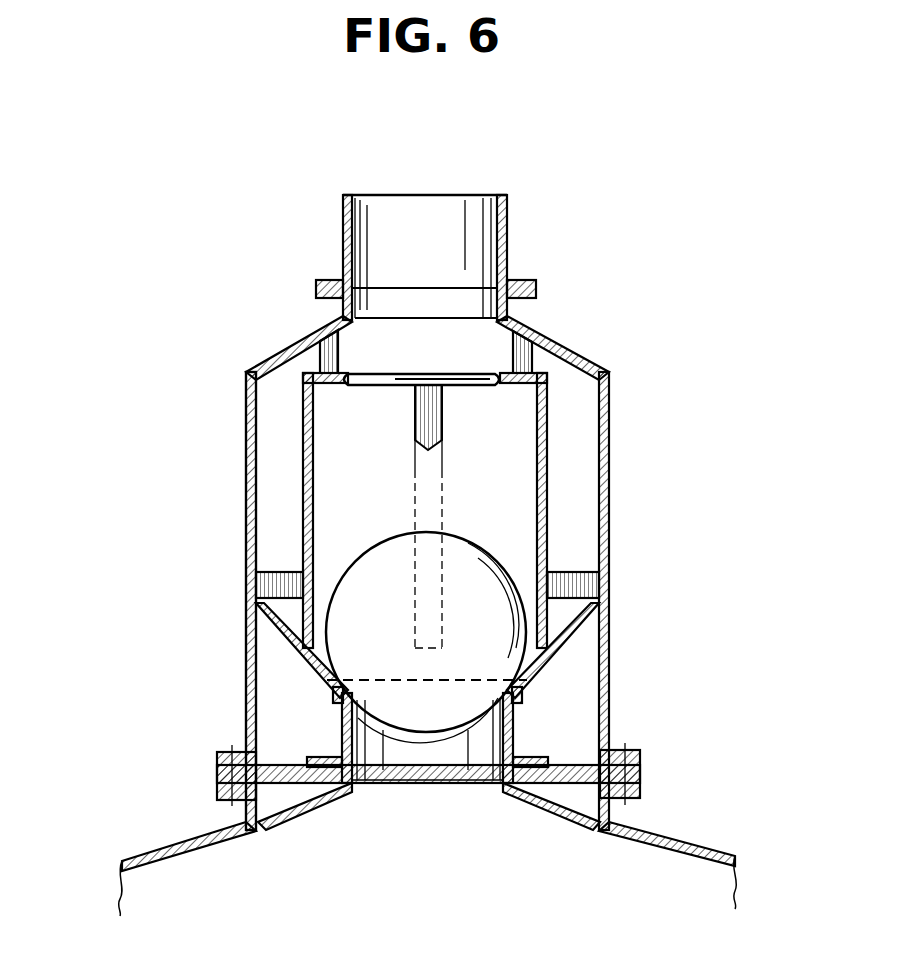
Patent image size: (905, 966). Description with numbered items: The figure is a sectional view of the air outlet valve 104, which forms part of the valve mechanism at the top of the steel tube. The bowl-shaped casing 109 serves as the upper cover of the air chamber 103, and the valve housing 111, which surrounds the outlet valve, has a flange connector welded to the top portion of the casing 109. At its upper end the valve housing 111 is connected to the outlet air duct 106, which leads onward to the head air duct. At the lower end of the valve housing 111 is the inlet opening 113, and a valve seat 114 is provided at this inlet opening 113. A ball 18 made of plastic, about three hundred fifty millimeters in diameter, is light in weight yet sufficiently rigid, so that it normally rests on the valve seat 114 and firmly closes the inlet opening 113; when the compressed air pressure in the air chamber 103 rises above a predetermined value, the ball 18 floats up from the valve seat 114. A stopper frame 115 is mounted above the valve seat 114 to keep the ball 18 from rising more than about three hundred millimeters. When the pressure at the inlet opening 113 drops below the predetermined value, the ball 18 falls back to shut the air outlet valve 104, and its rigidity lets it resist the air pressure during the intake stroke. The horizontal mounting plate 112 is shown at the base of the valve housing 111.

The ball 18 is at (360, 560).
The air chamber 103 is at (668, 880).
The air outlet valve 104 is at (627, 386).
The outlet air duct 106 is at (507, 250).
The casing 109 is at (168, 845).
The valve housing 111 is at (246, 450).
The plate 112 is at (640, 765).
The inlet opening 113 is at (428, 760).
The valve seat 114 is at (355, 680).
The stopper frame 115 is at (373, 372).